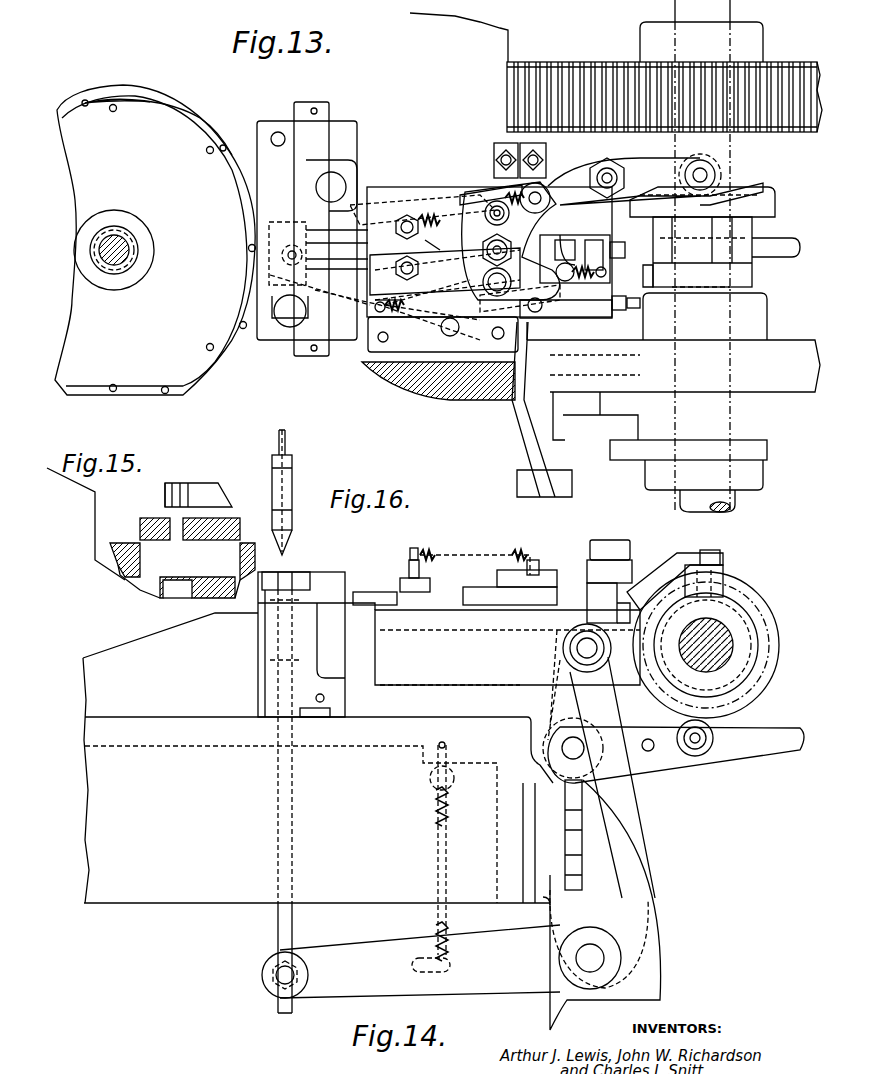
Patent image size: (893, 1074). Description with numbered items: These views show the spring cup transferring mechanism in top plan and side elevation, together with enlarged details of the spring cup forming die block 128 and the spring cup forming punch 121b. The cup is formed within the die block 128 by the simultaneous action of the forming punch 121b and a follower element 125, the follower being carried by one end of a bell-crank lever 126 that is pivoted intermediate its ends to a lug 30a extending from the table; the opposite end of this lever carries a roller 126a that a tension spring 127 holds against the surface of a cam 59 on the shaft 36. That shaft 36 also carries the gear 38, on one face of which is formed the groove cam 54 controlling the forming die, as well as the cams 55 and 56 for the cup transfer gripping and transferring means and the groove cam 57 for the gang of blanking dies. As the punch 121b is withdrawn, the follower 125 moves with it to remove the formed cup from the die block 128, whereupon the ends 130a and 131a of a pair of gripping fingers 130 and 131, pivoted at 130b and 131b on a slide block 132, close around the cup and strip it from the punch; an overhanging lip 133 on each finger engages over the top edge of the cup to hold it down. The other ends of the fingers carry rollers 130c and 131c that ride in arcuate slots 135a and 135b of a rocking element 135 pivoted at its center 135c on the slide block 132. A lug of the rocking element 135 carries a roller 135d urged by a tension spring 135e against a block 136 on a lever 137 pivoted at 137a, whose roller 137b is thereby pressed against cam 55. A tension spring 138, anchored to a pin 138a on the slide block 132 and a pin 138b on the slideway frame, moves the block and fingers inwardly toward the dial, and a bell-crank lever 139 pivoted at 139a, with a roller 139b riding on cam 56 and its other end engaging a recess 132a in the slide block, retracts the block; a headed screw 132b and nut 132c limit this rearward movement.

In FIG. 14, the lug 30a is at (602, 905).
In FIG. 13, the shaft 36 is at (721, 501).
In FIG. 14, the shaft 36 is at (735, 642).
In FIG. 13, the gear 38 is at (585, 56).
In FIG. 13, the groove cam 54 is at (782, 135).
In FIG. 13, the cam 55 is at (775, 186).
In FIG. 14, the cam 55 is at (748, 600).
In FIG. 13, the cam 56 is at (752, 274).
In FIG. 14, the cam 56 is at (752, 690).
In FIG. 13, the groove cam 57 is at (780, 340).
In FIG. 13, the cam 59 is at (752, 440).
In FIG. 14, the cam 59 is at (622, 677).
In FIG. 16, the forming punch 121b is at (297, 516).
In FIG. 14, the follower element 125 is at (278, 632).
In FIG. 13, the bell-crank lever 126 is at (530, 420).
In FIG. 14, the bell-crank lever 126 is at (458, 792).
In FIG. 14, the roller 126a is at (562, 648).
In FIG. 14, the tension spring 127 is at (436, 822).
In FIG. 15, the die block 128 is at (178, 545).
In FIG. 13, the gripping finger 130 is at (430, 230).
In FIG. 15, the gripping finger 130 is at (205, 485).
In FIG. 13, the finger end 130a is at (278, 240).
In FIG. 15, the finger end 130a is at (167, 495).
In FIG. 13, the pivot 130b is at (405, 218).
In FIG. 14, the pivot 130b is at (403, 570).
In FIG. 13, the roller 130c is at (490, 205).
In FIG. 13, the gripping finger 131 is at (445, 271).
In FIG. 13, the finger end 131a is at (286, 275).
In FIG. 13, the pivot 131b is at (427, 311).
In FIG. 13, the roller 131c is at (495, 300).
In FIG. 14, the slide block 132 is at (507, 647).
In FIG. 13, the recess 132a is at (580, 240).
In FIG. 13, the headed screw 132b is at (560, 240).
In FIG. 13, the nut 132c is at (630, 300).
In FIG. 15, the overhanging lip 133 is at (175, 483).
In FIG. 13, the rocking element 135 is at (440, 375).
In FIG. 13, the arcuate slot 135a is at (490, 200).
In FIG. 13, the arcuate slot 135b is at (520, 340).
In FIG. 13, the pivot center 135c is at (470, 310).
In FIG. 13, the roller 135d is at (545, 190).
In FIG. 13, the tension spring 135e is at (430, 210).
In FIG. 14, the tension spring 135e is at (437, 555).
In FIG. 13, the block 136 is at (516, 147).
In FIG. 13, the pivoted lever 137 is at (606, 145).
In FIG. 14, the pivoted lever 137 is at (642, 572).
In FIG. 13, the pivot 137a is at (620, 178).
In FIG. 13, the roller 137b is at (720, 170).
In FIG. 14, the roller 137b is at (718, 572).
In FIG. 13, the tension spring 138 is at (385, 315).
In FIG. 13, the pin 138a is at (595, 275).
In FIG. 13, the pin 138b is at (372, 320).
In FIG. 14, the bell-crank lever 139 is at (650, 760).
In FIG. 14, the pivot 139a is at (585, 760).
In FIG. 14, the roller 139b is at (703, 752).